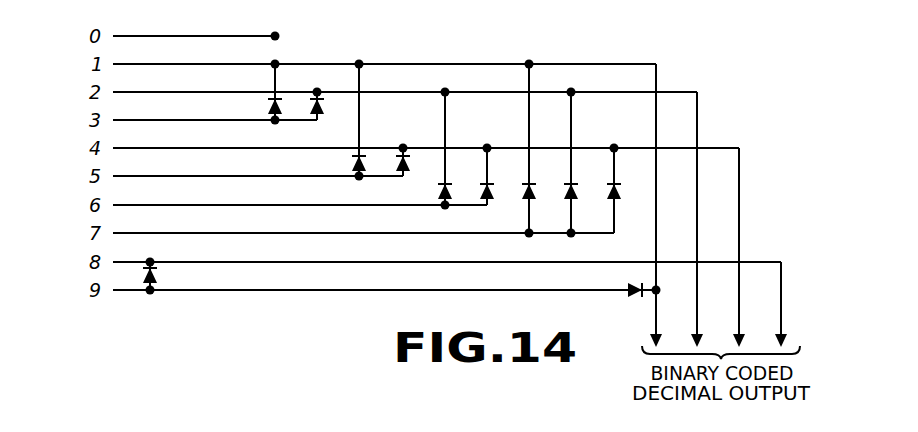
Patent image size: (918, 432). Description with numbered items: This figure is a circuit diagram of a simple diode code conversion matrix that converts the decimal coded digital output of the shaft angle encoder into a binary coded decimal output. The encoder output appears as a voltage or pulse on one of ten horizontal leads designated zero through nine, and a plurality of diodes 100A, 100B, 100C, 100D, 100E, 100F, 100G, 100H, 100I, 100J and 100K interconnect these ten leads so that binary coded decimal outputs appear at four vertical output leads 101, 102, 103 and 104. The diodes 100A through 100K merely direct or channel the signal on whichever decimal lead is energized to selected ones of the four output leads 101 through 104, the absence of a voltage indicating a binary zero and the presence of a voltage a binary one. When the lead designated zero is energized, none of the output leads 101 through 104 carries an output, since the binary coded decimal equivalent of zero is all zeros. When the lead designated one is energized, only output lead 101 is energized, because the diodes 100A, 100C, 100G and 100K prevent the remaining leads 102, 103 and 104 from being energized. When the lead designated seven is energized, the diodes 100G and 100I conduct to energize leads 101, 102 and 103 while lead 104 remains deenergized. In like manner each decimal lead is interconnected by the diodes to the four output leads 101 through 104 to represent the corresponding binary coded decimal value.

The diode 100A is at (272, 106).
The diode 100B is at (330, 110).
The diode 100C is at (352, 162).
The diode 100D is at (427, 132).
The diode 100E is at (440, 196).
The diode 100F is at (494, 196).
The diode 100G is at (525, 195).
The diode 100H is at (567, 195).
The diode 100I is at (620, 196).
The diode 100J is at (153, 273).
The diode 100K is at (633, 280).
The output lead 101 is at (656, 318).
The output lead 102 is at (696, 304).
The output lead 103 is at (738, 302).
The output lead 104 is at (780, 302).